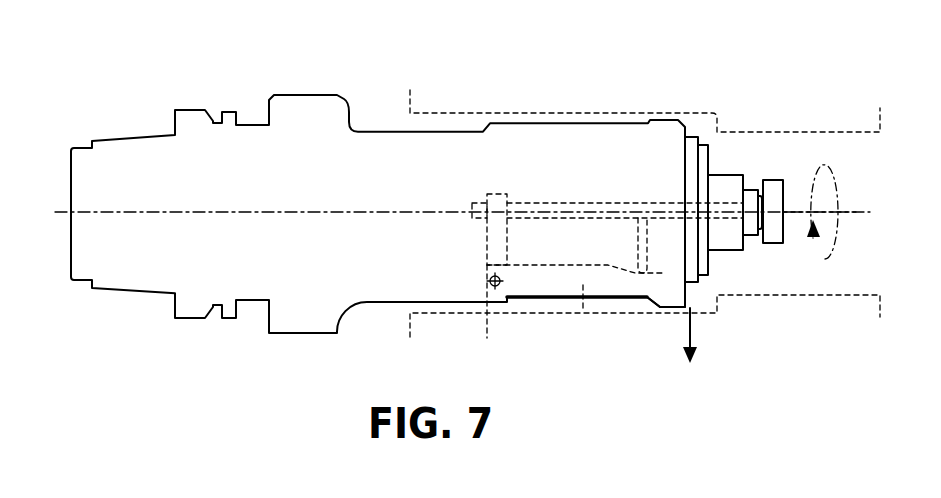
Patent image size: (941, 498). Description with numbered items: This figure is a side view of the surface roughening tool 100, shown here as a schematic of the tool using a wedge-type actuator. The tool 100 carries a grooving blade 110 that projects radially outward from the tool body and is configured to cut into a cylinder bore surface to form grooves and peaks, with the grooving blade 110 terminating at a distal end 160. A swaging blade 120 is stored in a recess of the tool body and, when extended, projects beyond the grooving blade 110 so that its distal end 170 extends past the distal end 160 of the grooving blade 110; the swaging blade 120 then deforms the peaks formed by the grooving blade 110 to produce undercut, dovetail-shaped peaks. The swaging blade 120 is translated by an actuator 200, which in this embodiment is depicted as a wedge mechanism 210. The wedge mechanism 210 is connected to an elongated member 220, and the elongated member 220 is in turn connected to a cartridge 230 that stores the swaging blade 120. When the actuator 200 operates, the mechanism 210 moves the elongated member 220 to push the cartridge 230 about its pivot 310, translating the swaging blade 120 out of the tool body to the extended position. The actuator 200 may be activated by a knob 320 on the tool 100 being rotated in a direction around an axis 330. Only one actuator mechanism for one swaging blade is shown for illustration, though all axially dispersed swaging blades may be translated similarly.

The surface roughening tool 100 is at (674, 76).
The grooving blade 110 is at (677, 308).
The swaging blade 120 is at (657, 302).
The distal end of the grooving blade 160 is at (675, 310).
The distal end of the swaging blade 170 is at (670, 307).
The actuator 200 is at (719, 157).
The wedge mechanism 210 is at (622, 203).
The elongated member 220 is at (638, 252).
The cartridge 230 is at (583, 312).
The pivot 310 is at (487, 338).
The knob 320 is at (773, 180).
The axis 330 is at (857, 212).